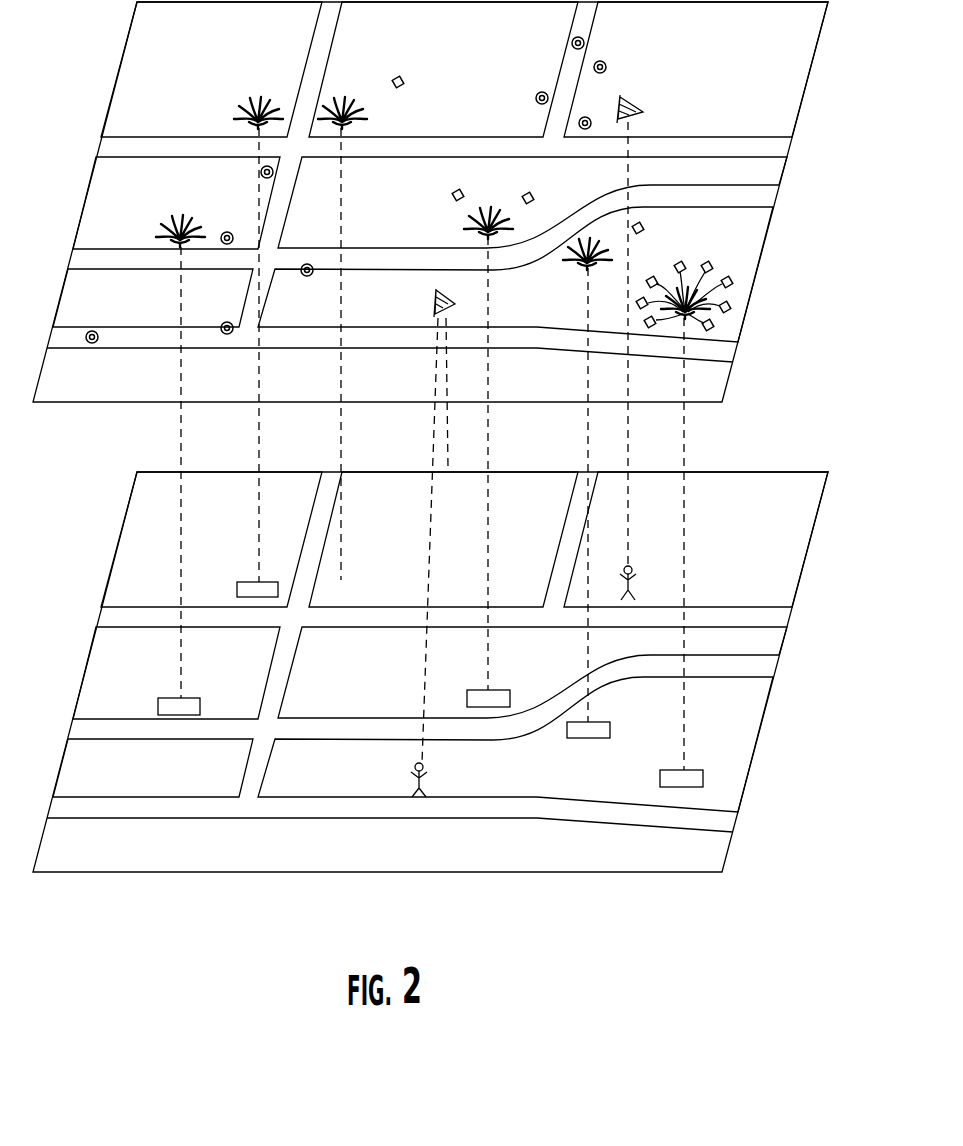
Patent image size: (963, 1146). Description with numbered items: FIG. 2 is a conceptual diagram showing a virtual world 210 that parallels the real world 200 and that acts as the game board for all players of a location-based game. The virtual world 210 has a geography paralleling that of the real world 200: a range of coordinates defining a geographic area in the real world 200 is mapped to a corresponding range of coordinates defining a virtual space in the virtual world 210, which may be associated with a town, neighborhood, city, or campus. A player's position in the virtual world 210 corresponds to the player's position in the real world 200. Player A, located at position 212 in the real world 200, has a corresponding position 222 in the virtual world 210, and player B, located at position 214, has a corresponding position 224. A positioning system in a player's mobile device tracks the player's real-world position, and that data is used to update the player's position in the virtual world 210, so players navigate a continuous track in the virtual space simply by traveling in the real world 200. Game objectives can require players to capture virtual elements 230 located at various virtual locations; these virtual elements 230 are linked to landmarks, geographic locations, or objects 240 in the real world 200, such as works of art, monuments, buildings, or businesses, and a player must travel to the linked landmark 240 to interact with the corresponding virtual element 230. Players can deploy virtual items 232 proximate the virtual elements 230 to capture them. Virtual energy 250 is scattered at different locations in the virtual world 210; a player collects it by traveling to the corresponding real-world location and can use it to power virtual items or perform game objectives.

The real world 200 is at (798, 580).
The virtual world 210 is at (798, 115).
The position of player A in the real world 212 is at (415, 767).
The position of player B in the real world 214 is at (637, 567).
The position of player A in the virtual world 222 is at (455, 303).
The position of player B in the virtual world 224 is at (642, 115).
The virtual elements 230 is at (258, 98).
The virtual items 232 is at (405, 78).
The real world landmarks or objects 240 is at (253, 582).
The virtual energy 250 is at (607, 62).